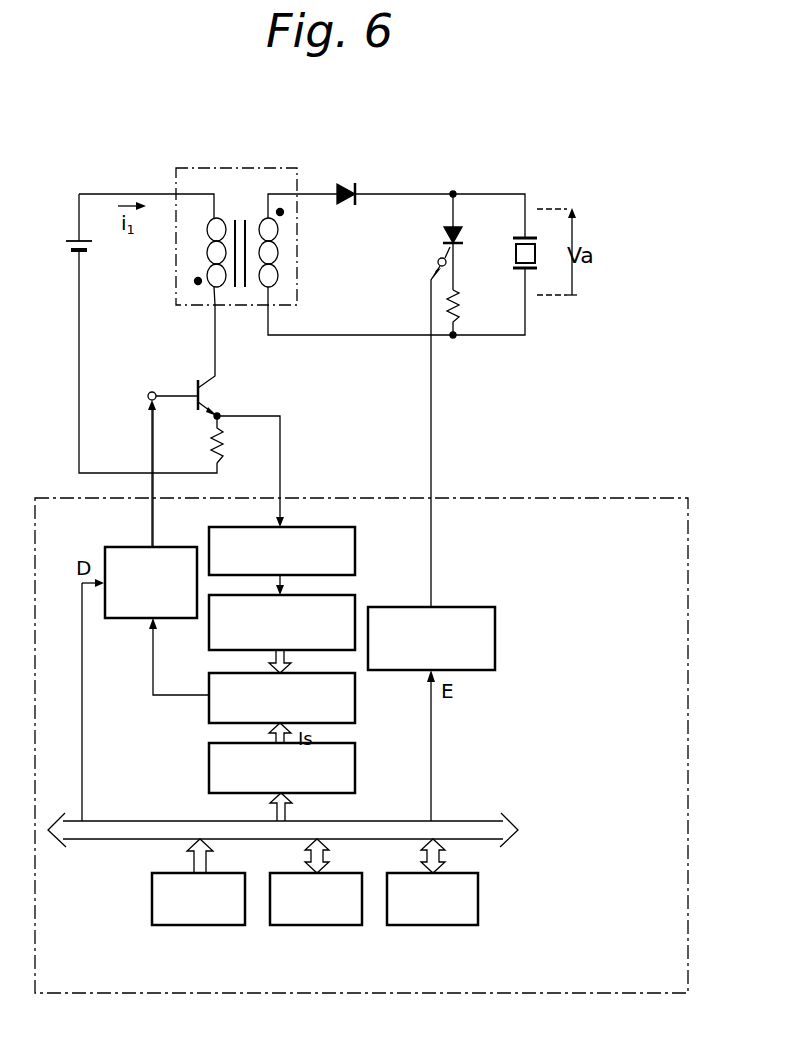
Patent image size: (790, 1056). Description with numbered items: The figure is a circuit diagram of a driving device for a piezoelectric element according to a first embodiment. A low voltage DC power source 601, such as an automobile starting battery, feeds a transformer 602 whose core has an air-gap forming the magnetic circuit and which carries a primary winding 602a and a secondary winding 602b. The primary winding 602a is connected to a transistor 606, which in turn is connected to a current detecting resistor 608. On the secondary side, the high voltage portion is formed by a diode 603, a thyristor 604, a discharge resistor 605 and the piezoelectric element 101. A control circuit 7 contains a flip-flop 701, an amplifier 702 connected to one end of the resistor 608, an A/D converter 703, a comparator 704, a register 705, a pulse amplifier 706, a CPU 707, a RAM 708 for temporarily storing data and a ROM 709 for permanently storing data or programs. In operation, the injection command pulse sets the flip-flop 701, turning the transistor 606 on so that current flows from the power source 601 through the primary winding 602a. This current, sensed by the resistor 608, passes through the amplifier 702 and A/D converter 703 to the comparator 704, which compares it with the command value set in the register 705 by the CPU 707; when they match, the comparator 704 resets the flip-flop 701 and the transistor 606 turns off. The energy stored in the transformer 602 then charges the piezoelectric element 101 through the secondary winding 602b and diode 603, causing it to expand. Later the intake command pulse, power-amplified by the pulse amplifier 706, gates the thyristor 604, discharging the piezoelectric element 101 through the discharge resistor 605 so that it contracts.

The low voltage DC power source 601 is at (90, 248).
The transformer 602 is at (254, 163).
The primary winding 602a is at (205, 228).
The secondary winding 602b is at (277, 237).
The diode 603 is at (367, 182).
The thyristor 604 is at (468, 230).
The discharge resistor 605 is at (463, 305).
The transistor 606 is at (217, 388).
The current detecting resistor 608 is at (225, 443).
The piezoelectric element 101 is at (510, 255).
The control circuit 7 is at (597, 497).
The flip-flop 701 is at (117, 620).
The amplifier 702 is at (357, 542).
The analog-digital converter 703 is at (210, 632).
The comparator 704 is at (208, 712).
The register 705 is at (209, 770).
The pulse amplifier 706 is at (477, 603).
The CPU 707 is at (432, 925).
The RAM 708 is at (316, 925).
The ROM 709 is at (198, 925).